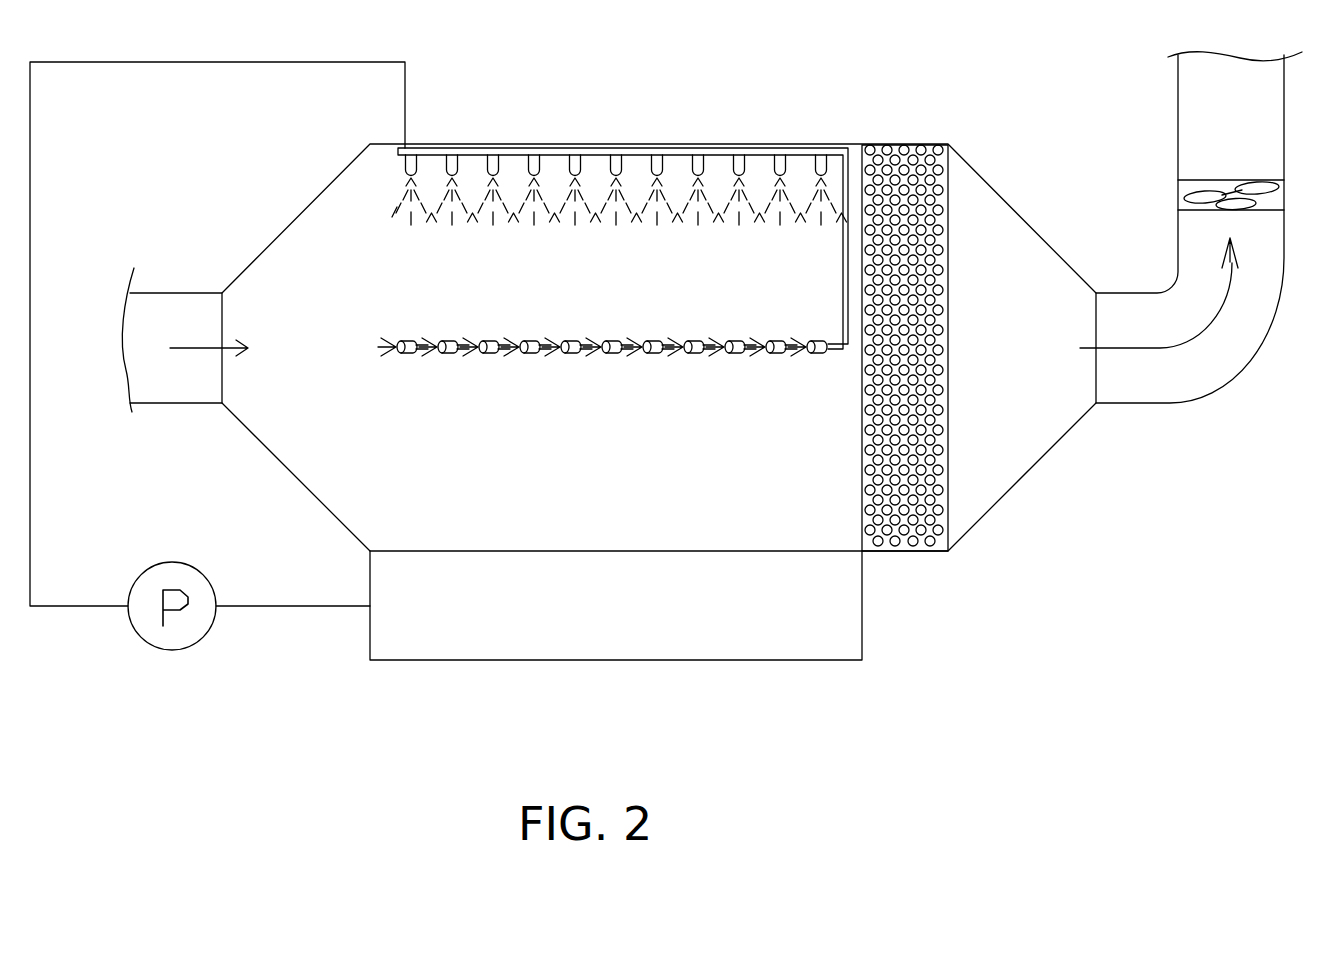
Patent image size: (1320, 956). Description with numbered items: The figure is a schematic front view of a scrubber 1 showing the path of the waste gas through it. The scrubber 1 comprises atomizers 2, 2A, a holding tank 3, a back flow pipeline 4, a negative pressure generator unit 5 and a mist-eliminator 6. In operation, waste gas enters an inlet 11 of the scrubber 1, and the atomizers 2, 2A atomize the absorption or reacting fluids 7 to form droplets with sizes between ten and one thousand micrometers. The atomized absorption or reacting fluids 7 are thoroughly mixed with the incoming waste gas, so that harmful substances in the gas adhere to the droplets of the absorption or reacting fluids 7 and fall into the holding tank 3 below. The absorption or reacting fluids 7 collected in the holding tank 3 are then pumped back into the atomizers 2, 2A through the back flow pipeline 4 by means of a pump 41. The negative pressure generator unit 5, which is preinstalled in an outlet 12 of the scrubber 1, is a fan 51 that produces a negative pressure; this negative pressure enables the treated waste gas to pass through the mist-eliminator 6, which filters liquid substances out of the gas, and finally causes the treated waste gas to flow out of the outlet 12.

The scrubber 1 is at (738, 143).
The atomizers 2 is at (495, 162).
The atomizers 2A is at (660, 360).
The holding tank 3 is at (827, 605).
The back flow pipeline 4 is at (302, 606).
The pump 41 is at (140, 636).
The negative pressure generator unit 5 is at (1165, 171).
The fan 51 is at (1183, 185).
The mist-eliminator 6 is at (887, 160).
The absorption or reacting fluids 7 is at (410, 208).
The inlet 11 is at (155, 310).
The outlet 12 is at (1203, 118).